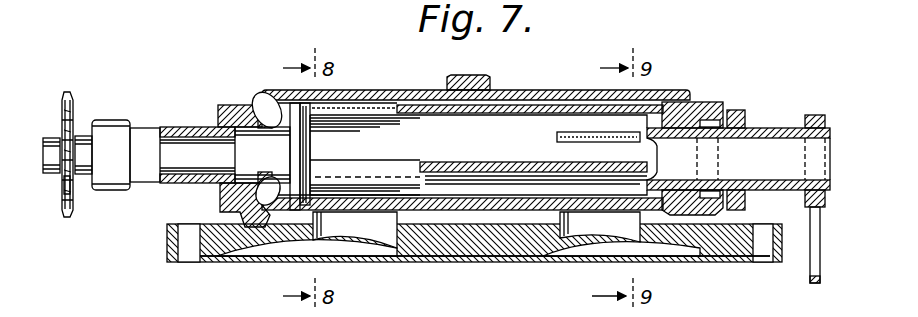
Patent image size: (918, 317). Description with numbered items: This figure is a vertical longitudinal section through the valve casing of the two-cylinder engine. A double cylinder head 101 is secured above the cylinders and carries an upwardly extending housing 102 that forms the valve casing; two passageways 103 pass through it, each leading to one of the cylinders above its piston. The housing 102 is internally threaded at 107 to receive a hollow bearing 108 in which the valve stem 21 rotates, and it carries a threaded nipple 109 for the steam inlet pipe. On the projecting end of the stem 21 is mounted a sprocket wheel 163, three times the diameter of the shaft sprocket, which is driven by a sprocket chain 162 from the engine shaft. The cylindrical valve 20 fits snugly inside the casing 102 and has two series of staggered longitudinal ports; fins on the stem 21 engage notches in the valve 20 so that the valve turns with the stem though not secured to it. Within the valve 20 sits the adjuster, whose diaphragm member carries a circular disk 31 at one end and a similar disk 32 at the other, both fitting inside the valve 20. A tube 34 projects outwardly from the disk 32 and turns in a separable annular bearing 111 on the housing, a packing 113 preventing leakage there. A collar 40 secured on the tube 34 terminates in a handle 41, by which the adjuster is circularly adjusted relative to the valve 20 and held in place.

The sprocket wheel 163 is at (71, 132).
The sprocket chain 162 is at (68, 180).
The valve stem 21 is at (50, 176).
The hollow bearing 108 is at (218, 110).
The internal threads 107 is at (255, 100).
The housing 102 is at (474, 138).
The threaded nipple 109 is at (490, 86).
The disk 32 is at (312, 150).
The valve 20 is at (455, 113).
The disk 31 is at (658, 158).
The tube 34 is at (748, 140).
The separable annular bearing 111 is at (690, 118).
The packing 113 is at (736, 115).
The collar 40 is at (815, 115).
The handle 41 is at (810, 215).
The passageway 103 is at (476, 230).
The double cylinder head 101 is at (447, 264).